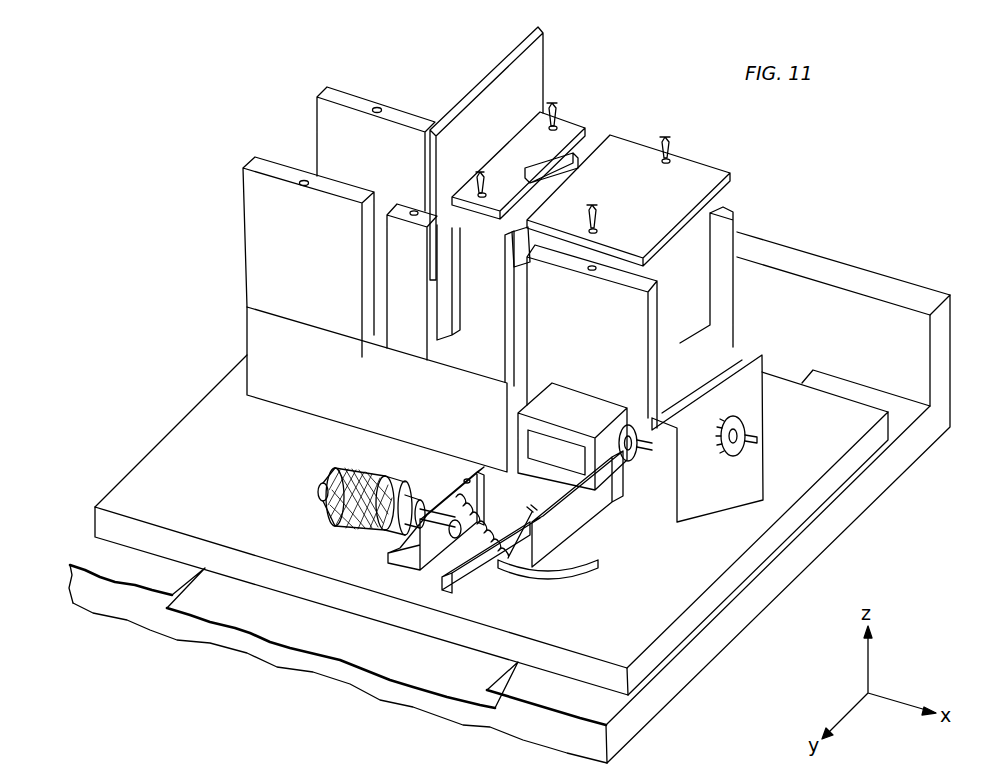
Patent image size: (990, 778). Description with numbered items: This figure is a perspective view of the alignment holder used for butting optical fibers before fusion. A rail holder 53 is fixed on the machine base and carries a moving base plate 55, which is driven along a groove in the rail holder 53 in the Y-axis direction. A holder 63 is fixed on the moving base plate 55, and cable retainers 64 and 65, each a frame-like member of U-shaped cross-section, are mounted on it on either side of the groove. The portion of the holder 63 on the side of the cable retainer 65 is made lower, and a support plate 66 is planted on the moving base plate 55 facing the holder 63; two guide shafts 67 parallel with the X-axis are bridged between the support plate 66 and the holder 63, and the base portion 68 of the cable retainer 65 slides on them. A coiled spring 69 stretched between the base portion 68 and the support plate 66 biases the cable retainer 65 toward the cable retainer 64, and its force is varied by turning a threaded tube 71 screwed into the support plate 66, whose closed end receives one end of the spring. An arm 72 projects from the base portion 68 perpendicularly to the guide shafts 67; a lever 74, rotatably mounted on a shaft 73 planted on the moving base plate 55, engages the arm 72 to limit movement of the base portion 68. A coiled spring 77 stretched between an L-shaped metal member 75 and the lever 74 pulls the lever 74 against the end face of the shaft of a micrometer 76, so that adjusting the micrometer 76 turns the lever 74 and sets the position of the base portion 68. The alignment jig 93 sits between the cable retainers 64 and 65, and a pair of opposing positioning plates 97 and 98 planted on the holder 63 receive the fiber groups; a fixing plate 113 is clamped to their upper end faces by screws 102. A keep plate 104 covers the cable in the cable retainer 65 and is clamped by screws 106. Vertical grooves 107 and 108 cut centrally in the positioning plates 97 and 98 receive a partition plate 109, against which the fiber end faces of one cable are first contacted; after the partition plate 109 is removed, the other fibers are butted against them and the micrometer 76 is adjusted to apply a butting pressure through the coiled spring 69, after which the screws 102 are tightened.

The rail holder 53 is at (675, 693).
The moving base plate 55 is at (148, 463).
The holder 63 is at (255, 325).
The cable retainer 64 is at (363, 98).
The cable retainer 65 is at (733, 297).
The support plate 66 is at (693, 503).
The guide shafts 67 is at (643, 447).
The base portion 68 is at (525, 432).
The coiled spring 69 is at (663, 413).
The threaded tube 71 is at (720, 417).
The arm 72 is at (597, 510).
The shaft 73 is at (533, 512).
The lever 74 is at (472, 578).
The L-shaped metal member 75 is at (448, 498).
The micrometer 76 is at (332, 525).
The coiled spring 77 is at (527, 580).
The alignment jig 93 is at (448, 373).
The positioning plate 97 is at (412, 207).
The positioning plate 98 is at (570, 158).
The screws 102 is at (553, 100).
The keep plate 104 is at (713, 172).
The screws 106 is at (665, 133).
The vertical groove 107 is at (452, 318).
The vertical groove 108 is at (540, 233).
The partition plate 109 is at (543, 57).
The fixing plate 113 is at (517, 143).